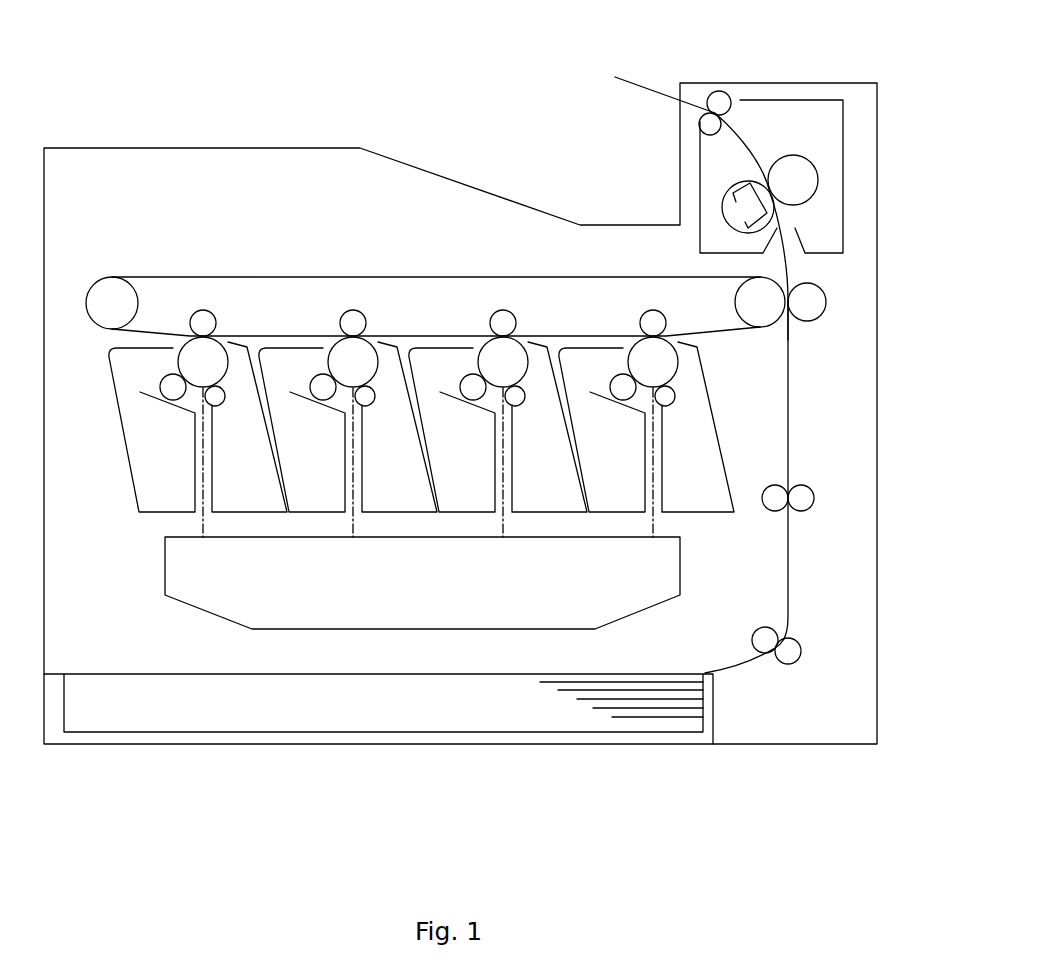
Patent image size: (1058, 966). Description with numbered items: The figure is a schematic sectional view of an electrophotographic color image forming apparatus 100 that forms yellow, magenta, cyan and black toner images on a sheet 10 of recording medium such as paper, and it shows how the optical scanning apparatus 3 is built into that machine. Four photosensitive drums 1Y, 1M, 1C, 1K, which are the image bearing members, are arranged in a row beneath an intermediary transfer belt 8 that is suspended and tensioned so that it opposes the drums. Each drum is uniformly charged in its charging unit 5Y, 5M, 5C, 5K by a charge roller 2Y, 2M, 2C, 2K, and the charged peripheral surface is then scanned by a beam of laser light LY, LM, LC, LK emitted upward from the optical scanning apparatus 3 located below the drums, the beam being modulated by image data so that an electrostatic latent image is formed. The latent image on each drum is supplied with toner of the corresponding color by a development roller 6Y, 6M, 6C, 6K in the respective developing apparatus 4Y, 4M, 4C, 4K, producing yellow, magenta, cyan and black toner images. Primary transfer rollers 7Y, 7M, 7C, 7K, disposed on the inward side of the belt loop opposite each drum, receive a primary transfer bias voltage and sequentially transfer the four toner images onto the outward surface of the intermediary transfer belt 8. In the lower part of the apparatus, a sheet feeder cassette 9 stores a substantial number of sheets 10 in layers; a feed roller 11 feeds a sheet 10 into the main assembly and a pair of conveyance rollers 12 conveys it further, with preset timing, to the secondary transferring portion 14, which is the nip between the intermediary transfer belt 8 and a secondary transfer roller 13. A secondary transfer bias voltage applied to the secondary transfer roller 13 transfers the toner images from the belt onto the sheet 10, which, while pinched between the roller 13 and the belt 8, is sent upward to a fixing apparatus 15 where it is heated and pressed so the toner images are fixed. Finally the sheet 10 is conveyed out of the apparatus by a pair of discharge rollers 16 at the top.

The image forming apparatus 100 is at (525, 148).
The intermediary transfer belt 8 is at (270, 277).
The pair of discharge rollers 16 is at (721, 99).
The fixing apparatus 15 is at (832, 168).
The secondary transfer roller 13 is at (822, 297).
The secondary transferring portion 14 is at (790, 320).
The pair of conveyance rollers 12 is at (807, 505).
The feed roller 11 is at (790, 657).
The sheet feeder cassette 9 is at (515, 720).
The sheet of recording medium 10 is at (658, 718).
The optical scanning apparatus 3 is at (373, 617).
The photosensitive drum 1Y is at (203, 362).
The photosensitive drum 1M is at (353, 362).
The photosensitive drum 1C is at (503, 362).
The photosensitive drum 1K is at (653, 362).
The primary transfer roller 7Y is at (203, 317).
The primary transfer roller 7M is at (353, 317).
The primary transfer roller 7C is at (503, 317).
The primary transfer roller 7K is at (653, 317).
The development roller 6Y is at (172, 396).
The development roller 6M is at (322, 396).
The development roller 6C is at (472, 396).
The development roller 6K is at (622, 396).
The charge roller 2Y is at (217, 402).
The charge roller 2M is at (367, 402).
The charge roller 2C is at (517, 402).
The charge roller 2K is at (667, 402).
The developing apparatus 4Y is at (152, 482).
The developing apparatus 4M is at (303, 495).
The developing apparatus 4C is at (453, 500).
The developing apparatus 4K is at (603, 500).
The charging unit 5Y is at (255, 497).
The charging unit 5M is at (405, 497).
The charging unit 5C is at (553, 495).
The charging unit 5K is at (699, 493).
The beam of laser light LY is at (202, 522).
The beam of laser light LM is at (353, 522).
The beam of laser light LC is at (502, 522).
The beam of laser light LK is at (652, 522).